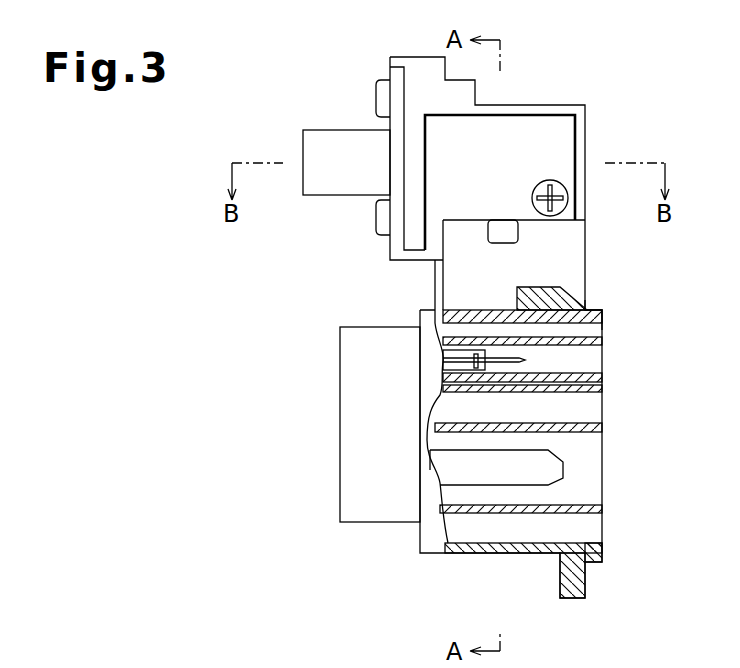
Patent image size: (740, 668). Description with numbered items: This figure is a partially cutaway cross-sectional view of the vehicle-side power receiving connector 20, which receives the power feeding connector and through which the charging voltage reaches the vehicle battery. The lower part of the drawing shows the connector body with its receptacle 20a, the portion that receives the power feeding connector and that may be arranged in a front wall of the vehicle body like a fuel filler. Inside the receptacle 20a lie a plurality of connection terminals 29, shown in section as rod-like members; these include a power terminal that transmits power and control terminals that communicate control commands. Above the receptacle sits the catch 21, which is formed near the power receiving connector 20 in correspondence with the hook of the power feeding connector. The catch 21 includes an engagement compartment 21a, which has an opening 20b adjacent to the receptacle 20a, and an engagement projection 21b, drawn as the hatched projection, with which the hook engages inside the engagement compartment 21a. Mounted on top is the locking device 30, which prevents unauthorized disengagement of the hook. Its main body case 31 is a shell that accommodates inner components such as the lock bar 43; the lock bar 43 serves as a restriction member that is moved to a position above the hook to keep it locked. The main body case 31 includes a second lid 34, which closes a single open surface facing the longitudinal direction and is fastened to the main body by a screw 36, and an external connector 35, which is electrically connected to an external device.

The power receiving connector 20 is at (532, 432).
The receptacle 20a is at (596, 538).
The opening 20b is at (588, 282).
The catch 21 is at (586, 235).
The engagement compartment 21a is at (471, 308).
The engagement projection 21b is at (534, 287).
The connection terminals 29 is at (525, 360).
The locking device 30 is at (533, 175).
The main body case 31 is at (548, 105).
The second lid 34 is at (567, 130).
The external connector 35 is at (318, 130).
The screw 36 is at (376, 98).
The lock bar 43 is at (497, 218).